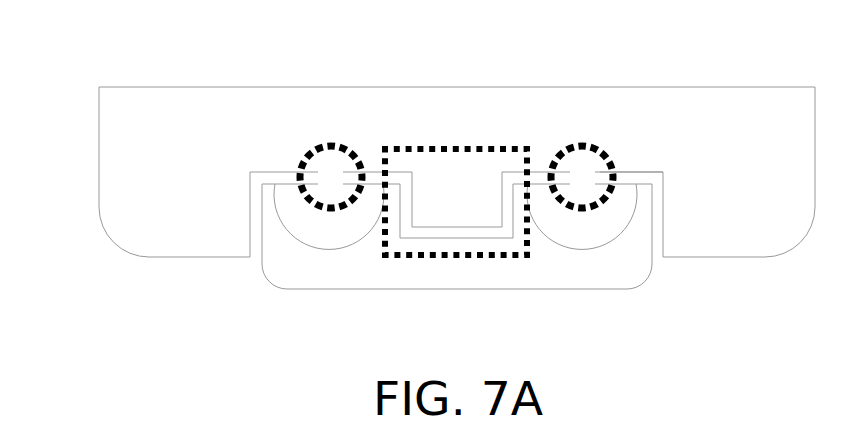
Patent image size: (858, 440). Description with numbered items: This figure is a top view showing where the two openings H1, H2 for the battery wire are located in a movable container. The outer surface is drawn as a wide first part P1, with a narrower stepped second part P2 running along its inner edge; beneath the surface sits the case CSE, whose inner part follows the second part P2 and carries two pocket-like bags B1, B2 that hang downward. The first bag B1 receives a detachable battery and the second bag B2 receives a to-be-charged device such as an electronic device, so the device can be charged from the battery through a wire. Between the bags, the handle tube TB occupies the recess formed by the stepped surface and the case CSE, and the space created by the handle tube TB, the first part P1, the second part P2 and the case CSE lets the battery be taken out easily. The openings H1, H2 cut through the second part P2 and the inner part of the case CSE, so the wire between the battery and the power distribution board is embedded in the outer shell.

The first part P1 is at (793, 242).
The second part P2 is at (630, 158).
The case CSE is at (643, 282).
The bag B1 is at (336, 246).
The bag B2 is at (588, 246).
The handle tube TB is at (468, 274).
The opening H1 is at (332, 132).
The opening H2 is at (583, 132).